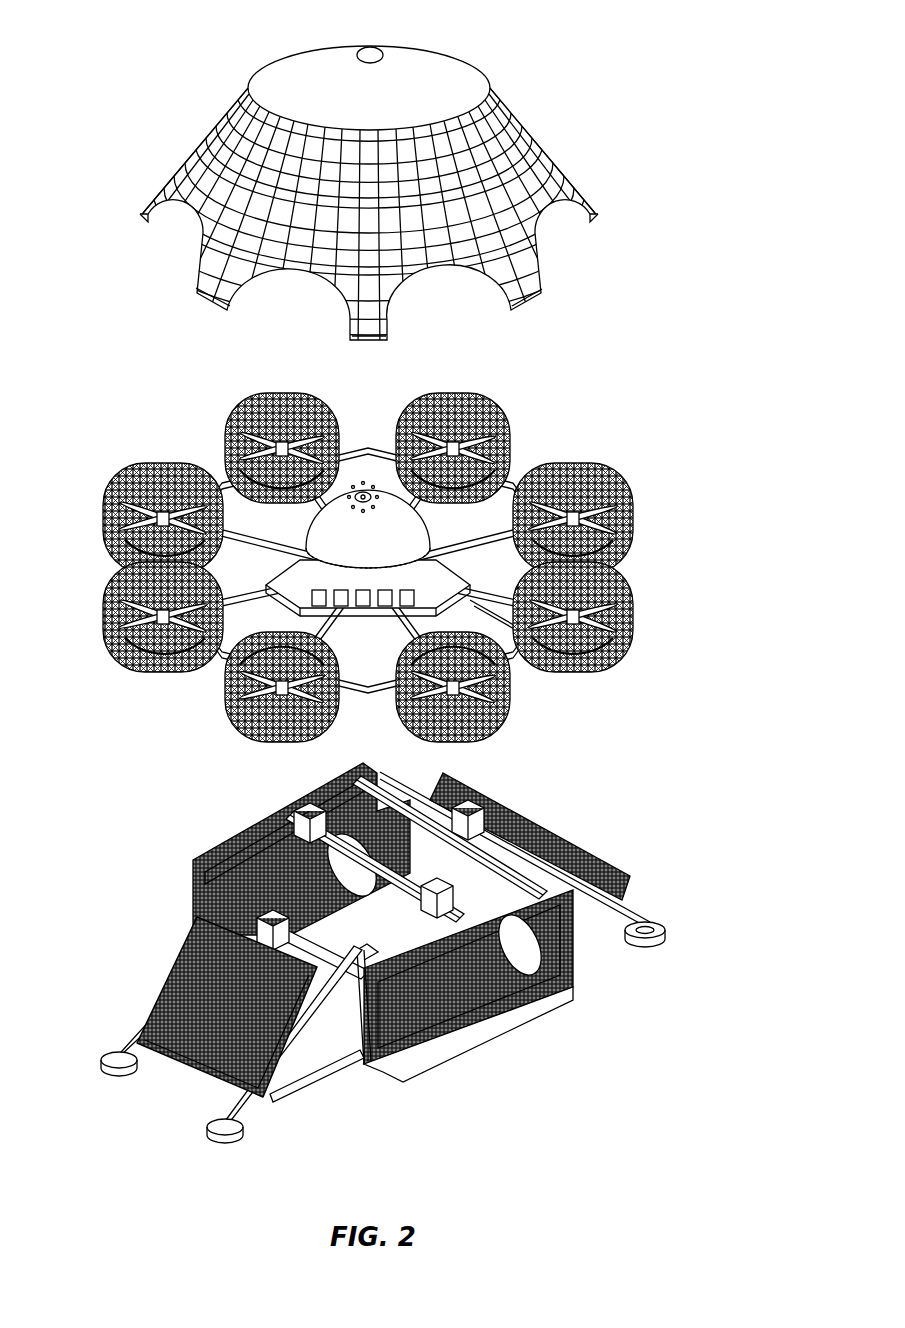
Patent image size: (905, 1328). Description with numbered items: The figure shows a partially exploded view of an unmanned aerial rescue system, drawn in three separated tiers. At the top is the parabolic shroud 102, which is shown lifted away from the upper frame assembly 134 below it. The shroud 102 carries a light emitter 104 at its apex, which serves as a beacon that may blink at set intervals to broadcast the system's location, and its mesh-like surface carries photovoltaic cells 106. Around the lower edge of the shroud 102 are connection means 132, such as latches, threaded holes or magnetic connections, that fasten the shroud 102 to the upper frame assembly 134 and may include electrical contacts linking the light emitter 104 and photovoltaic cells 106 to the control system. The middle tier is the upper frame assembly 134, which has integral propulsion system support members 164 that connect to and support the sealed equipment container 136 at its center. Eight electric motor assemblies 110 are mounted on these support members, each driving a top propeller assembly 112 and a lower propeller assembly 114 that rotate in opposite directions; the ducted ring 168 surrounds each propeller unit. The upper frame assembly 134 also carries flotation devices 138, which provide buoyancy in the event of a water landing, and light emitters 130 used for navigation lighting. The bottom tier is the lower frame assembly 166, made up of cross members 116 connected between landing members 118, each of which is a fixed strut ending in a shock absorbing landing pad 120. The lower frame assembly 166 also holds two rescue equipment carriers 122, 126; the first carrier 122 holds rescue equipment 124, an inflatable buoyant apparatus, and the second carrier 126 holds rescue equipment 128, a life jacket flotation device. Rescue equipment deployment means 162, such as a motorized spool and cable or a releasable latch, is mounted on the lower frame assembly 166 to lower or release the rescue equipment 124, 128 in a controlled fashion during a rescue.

The parabolic shroud 102 is at (352, 176).
The light emitter 104 is at (372, 48).
The photovoltaic cells 106 is at (510, 115).
The connection means 132 is at (143, 215).
The rotor duct 168 is at (175, 468).
The top propeller assembly 112 is at (124, 509).
The electric motor assembly 110 is at (155, 522).
The lower propeller assembly 114 is at (150, 547).
The sealed equipment container 136 is at (388, 492).
The upper frame assembly 134 is at (527, 462).
The propulsion system support members 164 is at (512, 548).
The flotation devices 138 is at (490, 617).
The light emitters 130 is at (207, 657).
The rescue equipment deployment means 162 is at (477, 807).
The lower frame assembly 166 is at (210, 887).
The rescue equipment carrier 122 is at (115, 1045).
The rescue equipment 124 is at (190, 1040).
The rescue equipment 128 is at (490, 1020).
The rescue equipment carrier 126 is at (415, 1080).
The cross member 116 is at (293, 1050).
The landing member 118 is at (250, 1100).
The landing pad 120 is at (203, 1125).